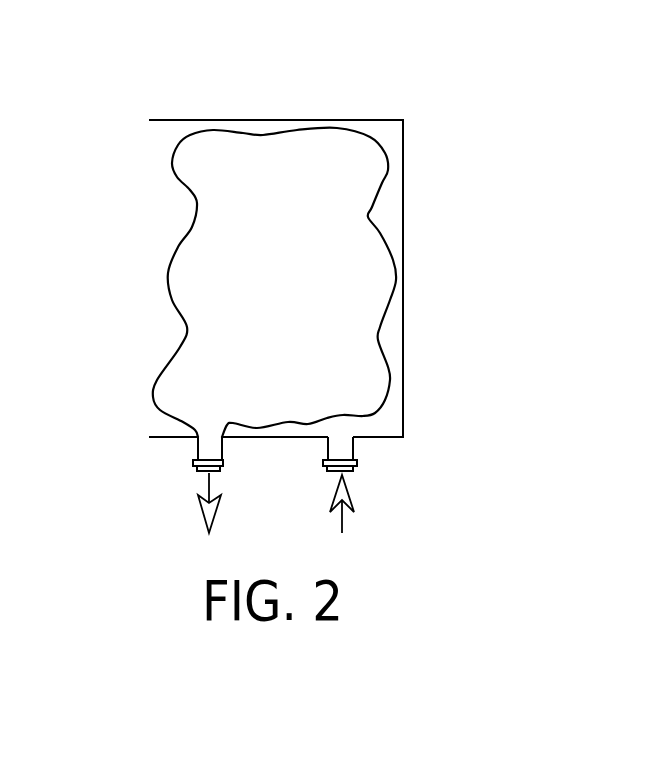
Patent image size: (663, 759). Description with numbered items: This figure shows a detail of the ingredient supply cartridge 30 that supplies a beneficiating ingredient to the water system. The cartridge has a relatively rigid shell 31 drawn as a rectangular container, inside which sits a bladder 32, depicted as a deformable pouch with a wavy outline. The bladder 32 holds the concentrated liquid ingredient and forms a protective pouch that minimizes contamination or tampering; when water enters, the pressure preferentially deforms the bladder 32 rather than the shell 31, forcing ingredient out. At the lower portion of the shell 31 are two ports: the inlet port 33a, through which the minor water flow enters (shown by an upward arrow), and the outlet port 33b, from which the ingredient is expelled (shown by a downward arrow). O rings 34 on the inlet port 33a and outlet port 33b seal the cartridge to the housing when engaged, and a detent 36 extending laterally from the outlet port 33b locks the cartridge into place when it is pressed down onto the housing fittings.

The ingredient supply cartridge 30 is at (247, 82).
The shell 31 is at (403, 272).
The bladder 32 is at (390, 163).
The inlet port 33a is at (343, 520).
The outlet port 33b is at (207, 485).
The O rings 34 is at (224, 463).
The detent 36 is at (190, 450).